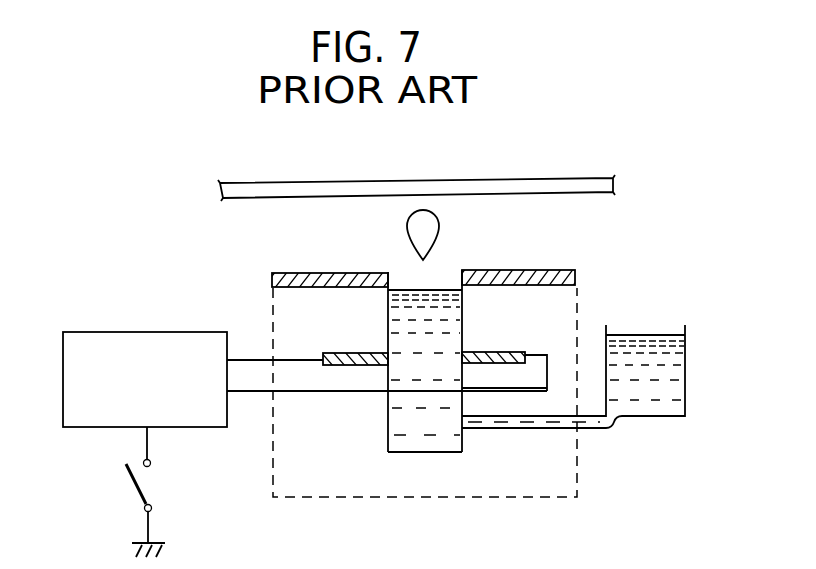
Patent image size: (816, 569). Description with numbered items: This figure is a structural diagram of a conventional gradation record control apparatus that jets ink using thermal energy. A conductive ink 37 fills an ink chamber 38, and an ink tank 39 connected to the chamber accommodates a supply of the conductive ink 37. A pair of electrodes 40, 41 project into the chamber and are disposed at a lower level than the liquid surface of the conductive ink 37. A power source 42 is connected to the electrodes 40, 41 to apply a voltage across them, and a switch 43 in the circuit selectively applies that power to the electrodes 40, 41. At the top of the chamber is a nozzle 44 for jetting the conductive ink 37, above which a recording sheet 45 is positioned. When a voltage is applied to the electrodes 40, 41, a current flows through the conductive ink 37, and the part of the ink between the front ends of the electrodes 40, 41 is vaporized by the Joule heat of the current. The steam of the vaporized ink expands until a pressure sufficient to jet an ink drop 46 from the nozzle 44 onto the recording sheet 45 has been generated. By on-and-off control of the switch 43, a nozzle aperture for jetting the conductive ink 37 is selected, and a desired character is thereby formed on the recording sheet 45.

The conductive ink 37 is at (420, 414).
The ink chamber 38 is at (427, 452).
The ink tank 39 is at (645, 407).
The electrode 40 is at (360, 352).
The electrode 41 is at (490, 352).
The power source 42 is at (148, 332).
The switch 43 is at (130, 484).
The nozzle 44 is at (410, 283).
The recording sheet 45 is at (465, 184).
The ink drop 46 is at (428, 225).